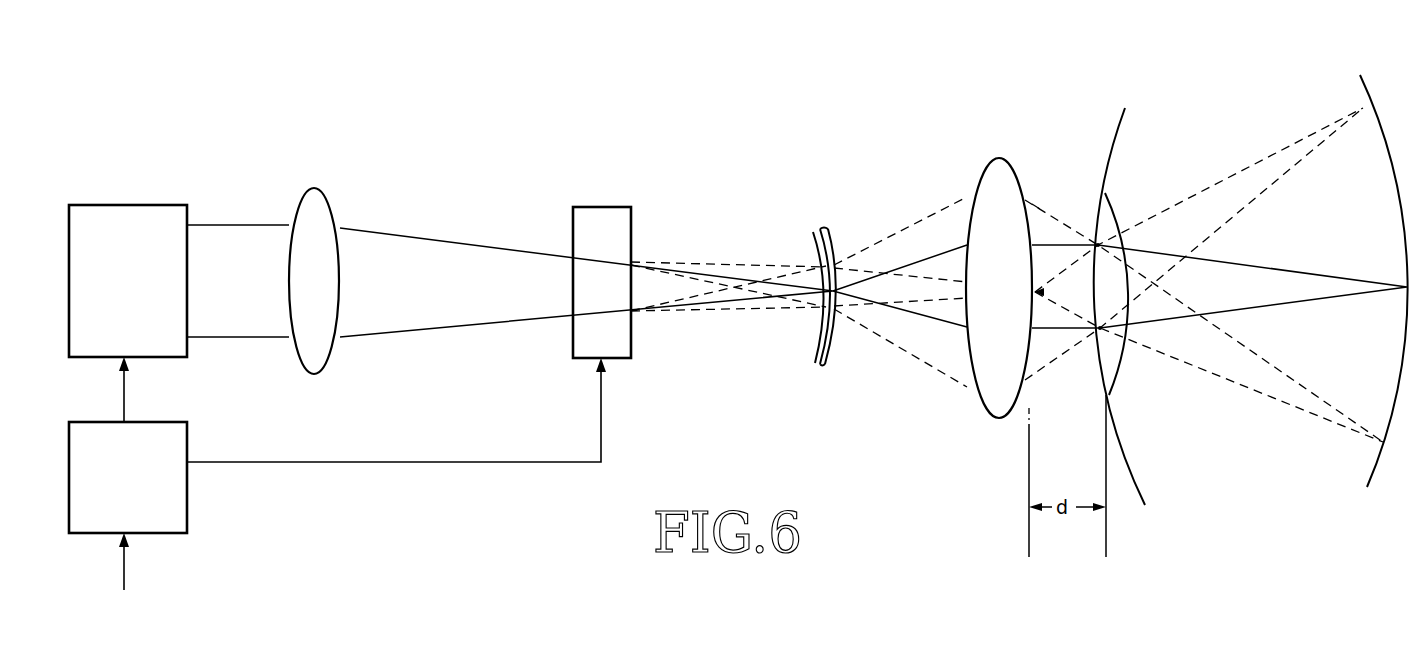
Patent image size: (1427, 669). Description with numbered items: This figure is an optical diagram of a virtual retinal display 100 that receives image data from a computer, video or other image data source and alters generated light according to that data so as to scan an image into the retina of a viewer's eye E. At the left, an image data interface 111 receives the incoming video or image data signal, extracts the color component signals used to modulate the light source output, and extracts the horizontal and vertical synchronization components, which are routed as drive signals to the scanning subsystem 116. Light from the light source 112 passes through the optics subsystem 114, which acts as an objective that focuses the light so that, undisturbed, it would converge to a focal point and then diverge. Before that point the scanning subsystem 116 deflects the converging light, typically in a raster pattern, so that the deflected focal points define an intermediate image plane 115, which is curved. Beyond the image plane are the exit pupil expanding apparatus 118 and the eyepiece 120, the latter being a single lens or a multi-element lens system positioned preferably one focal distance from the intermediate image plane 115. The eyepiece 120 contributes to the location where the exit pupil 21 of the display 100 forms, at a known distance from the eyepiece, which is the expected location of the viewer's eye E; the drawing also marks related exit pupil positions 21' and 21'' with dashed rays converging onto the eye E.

The virtual retinal display 100 is at (990, 75).
The image data interface 111 is at (189, 507).
The light source 112 is at (164, 205).
The optics subsystem 114 is at (330, 203).
The intermediate image plane 115 is at (813, 245).
The scanning subsystem 116 is at (610, 207).
The exit pupil expanding apparatus 118 is at (828, 233).
The eyepiece 120 is at (1001, 157).
The exit pupil 21 is at (1082, 218).
The displaced image point 21' is at (1050, 182).
The displaced image point 21'' is at (1076, 374).
The viewer's eye E is at (1117, 128).